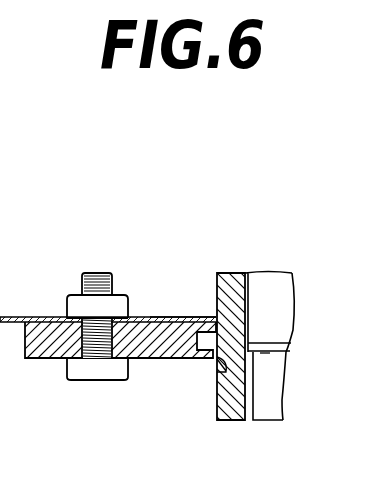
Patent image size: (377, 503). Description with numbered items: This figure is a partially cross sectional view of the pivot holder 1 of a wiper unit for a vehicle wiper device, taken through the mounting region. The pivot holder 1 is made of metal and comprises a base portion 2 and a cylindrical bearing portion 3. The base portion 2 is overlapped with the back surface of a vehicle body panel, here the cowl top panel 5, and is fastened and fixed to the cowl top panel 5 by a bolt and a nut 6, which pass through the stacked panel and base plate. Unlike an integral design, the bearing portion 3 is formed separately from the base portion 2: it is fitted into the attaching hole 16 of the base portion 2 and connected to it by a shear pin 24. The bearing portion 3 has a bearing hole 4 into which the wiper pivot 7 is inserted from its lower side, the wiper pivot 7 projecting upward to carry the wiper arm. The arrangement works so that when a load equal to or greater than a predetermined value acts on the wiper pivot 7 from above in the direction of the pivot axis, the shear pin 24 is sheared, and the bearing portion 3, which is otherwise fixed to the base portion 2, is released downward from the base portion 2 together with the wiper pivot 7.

The pivot holder 1 is at (205, 412).
The base portion 2 is at (40, 359).
The bearing portion 3 is at (217, 300).
The bearing hole 4 is at (250, 306).
The cowl top panel 5 is at (0, 328).
The bolt and nut 6 is at (68, 309).
The wiper pivot 7 is at (295, 327).
The attaching hole 16 is at (222, 364).
The shear pin 24 is at (188, 318).